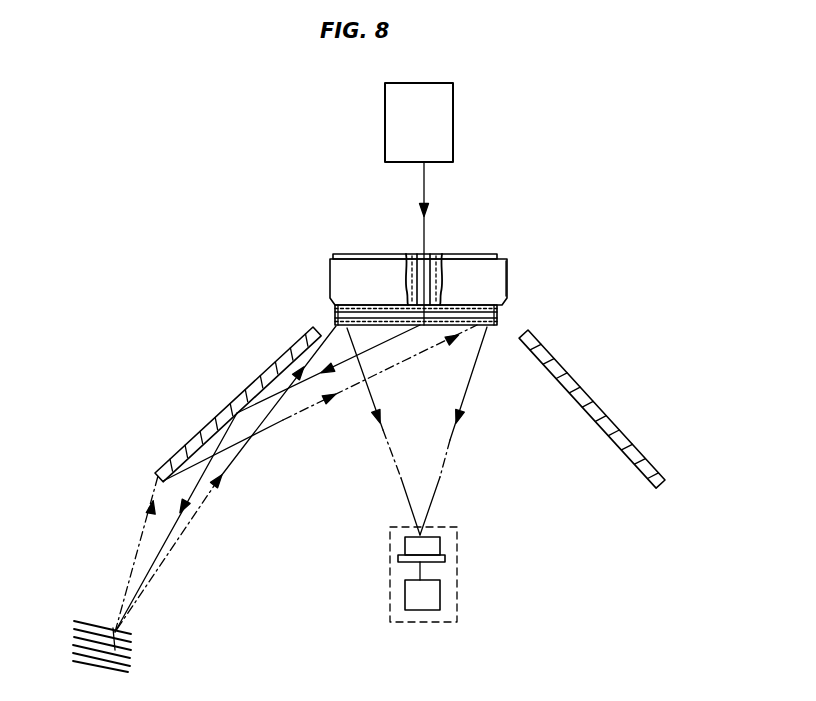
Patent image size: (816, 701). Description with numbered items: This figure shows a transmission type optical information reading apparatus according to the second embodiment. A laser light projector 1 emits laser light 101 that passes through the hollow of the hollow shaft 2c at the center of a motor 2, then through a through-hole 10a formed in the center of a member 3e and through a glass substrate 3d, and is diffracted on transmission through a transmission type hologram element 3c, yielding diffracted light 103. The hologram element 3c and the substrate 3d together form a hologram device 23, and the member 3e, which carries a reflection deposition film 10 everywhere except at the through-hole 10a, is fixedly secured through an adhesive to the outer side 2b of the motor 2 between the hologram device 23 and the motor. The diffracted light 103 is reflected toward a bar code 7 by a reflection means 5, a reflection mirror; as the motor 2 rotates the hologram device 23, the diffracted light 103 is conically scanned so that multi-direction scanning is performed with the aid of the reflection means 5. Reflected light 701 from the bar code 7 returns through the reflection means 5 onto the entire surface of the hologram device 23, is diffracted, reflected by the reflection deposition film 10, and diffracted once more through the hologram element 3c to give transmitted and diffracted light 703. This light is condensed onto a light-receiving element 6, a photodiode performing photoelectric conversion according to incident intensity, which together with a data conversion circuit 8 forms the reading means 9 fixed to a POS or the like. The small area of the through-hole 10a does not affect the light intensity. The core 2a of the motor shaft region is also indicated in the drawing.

The laser light projector 1 is at (453, 97).
The laser light 101 is at (424, 185).
The motor 2 is at (460, 266).
The core 2a is at (405, 257).
The outer side of the motor 2b is at (508, 257).
The hollow shaft 2c is at (399, 258).
The through-hole 10a is at (406, 300).
The member 3e is at (507, 290).
The reflection deposition film 10 is at (499, 315).
The substrate 3d is at (499, 323).
The transmission type hologram element 3c is at (496, 327).
The hologram device 23 is at (333, 318).
The reflection means 5 is at (166, 470).
The diffracted light 103 is at (395, 337).
The reflected light 701 is at (172, 560).
The transmitted and diffracted light 703 is at (440, 477).
The light-receiving element 6 is at (445, 542).
The data conversion circuit 8 is at (440, 590).
The reading means 9 is at (457, 618).
The bar code 7 is at (125, 633).